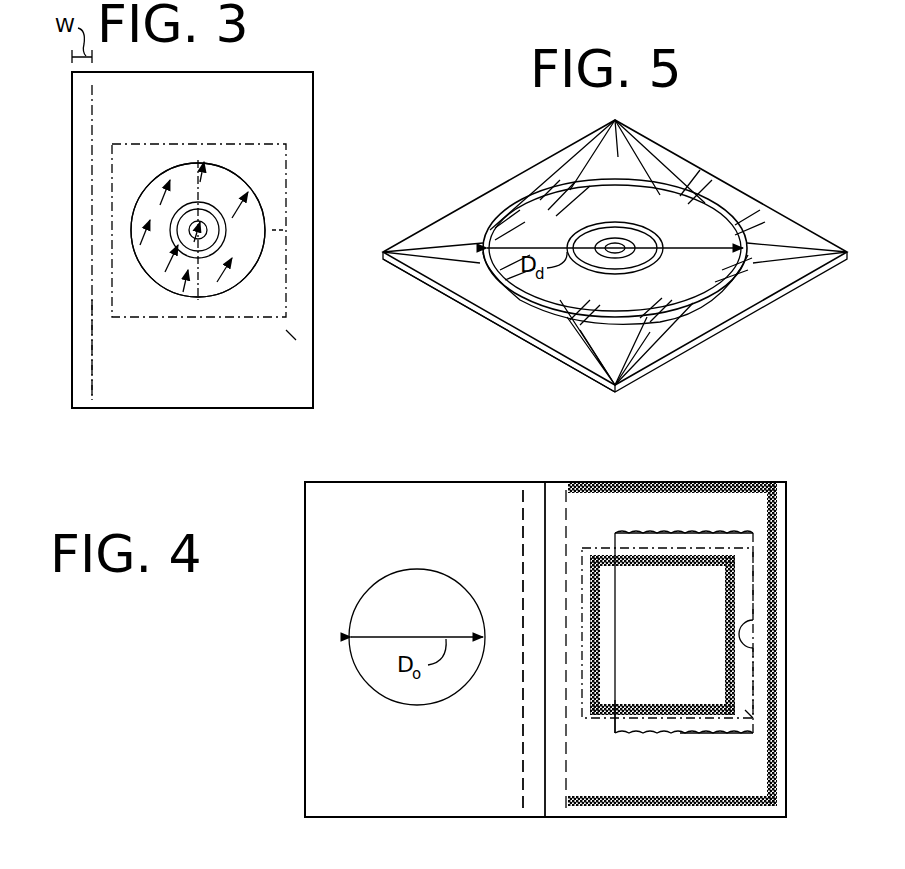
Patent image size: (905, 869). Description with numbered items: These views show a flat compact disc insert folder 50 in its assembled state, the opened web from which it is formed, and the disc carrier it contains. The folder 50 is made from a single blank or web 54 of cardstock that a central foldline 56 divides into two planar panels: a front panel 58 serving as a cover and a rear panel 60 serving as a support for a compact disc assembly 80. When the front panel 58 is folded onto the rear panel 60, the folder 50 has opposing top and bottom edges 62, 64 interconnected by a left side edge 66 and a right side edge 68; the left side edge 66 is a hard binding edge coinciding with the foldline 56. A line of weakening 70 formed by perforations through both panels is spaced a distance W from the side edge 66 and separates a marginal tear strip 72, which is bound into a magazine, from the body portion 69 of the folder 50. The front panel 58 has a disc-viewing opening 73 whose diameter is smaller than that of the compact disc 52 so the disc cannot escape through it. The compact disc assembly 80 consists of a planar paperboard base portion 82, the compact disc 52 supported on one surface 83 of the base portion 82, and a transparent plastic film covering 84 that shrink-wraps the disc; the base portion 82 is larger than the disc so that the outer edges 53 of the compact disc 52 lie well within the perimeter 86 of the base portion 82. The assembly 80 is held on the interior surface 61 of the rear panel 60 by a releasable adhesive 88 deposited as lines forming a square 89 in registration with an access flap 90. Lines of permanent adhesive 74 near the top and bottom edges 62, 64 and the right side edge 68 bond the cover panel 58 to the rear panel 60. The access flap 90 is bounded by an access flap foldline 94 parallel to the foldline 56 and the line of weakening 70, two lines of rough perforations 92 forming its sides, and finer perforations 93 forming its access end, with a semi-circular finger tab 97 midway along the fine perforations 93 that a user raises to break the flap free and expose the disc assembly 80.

In FIG. 3, the folder 50 is at (285, 117).
In FIG. 4, the folder 50 is at (501, 478).
In FIG. 3, the compact disc 52 is at (232, 204).
In FIG. 5, the compact disc 52 is at (698, 278).
In FIG. 5, the outer edges of the compact disc 53 is at (698, 300).
In FIG. 4, the web 54 is at (369, 744).
In FIG. 3, the central foldline 56 is at (72, 344).
In FIG. 4, the central foldline 56 is at (545, 537).
In FIG. 3, the front panel 58 is at (296, 340).
In FIG. 4, the front panel 58 is at (335, 769).
In FIG. 4, the rear panel 60 is at (758, 774).
In FIG. 4, the interior surface of the rear panel 61 is at (716, 794).
In FIG. 3, the top edge 62 is at (262, 70).
In FIG. 4, the top edge 62 is at (683, 478).
In FIG. 3, the bottom edge 64 is at (212, 410).
In FIG. 4, the bottom edge 64 is at (669, 817).
In FIG. 3, the left side edge 66 is at (72, 246).
In FIG. 3, the right side edge 68 is at (314, 232).
In FIG. 4, the right side edge 68 is at (305, 641).
In FIG. 3, the body portion 69 is at (300, 158).
In FIG. 3, the line of weakening 70 is at (92, 382).
In FIG. 4, the line of weakening 70 is at (523, 548).
In FIG. 3, the marginal tear strip 72 is at (92, 98).
In FIG. 4, the marginal tear strip 72 is at (553, 512).
In FIG. 3, the disc-viewing opening 73 is at (208, 172).
In FIG. 4, the disc-viewing opening 73 is at (380, 602).
In FIG. 4, the permanent adhesive 74 is at (754, 489).
In FIG. 3, the compact disc assembly 80 is at (172, 282).
In FIG. 5, the compact disc assembly 80 is at (412, 226).
In FIG. 4, the compact disc assembly 80 is at (490, 868).
In FIG. 5, the base portion 82 is at (770, 228).
In FIG. 4, the base portion 82 is at (526, 868).
In FIG. 5, the surface of the base portion 83 is at (630, 333).
In FIG. 5, the covering 84 is at (617, 157).
In FIG. 4, the covering 84 is at (600, 868).
In FIG. 5, the perimeter of the base portion 86 is at (487, 322).
In FIG. 4, the releasable adhesive 88 is at (665, 712).
In FIG. 4, the square adhesive pattern 89 is at (729, 576).
In FIG. 4, the access flap 90 is at (704, 719).
In FIG. 4, the rough perforations 92 is at (706, 531).
In FIG. 4, the fine perforations 93 is at (754, 706).
In FIG. 4, the access flap foldline 94 is at (615, 721).
In FIG. 4, the finger tab 97 is at (744, 637).